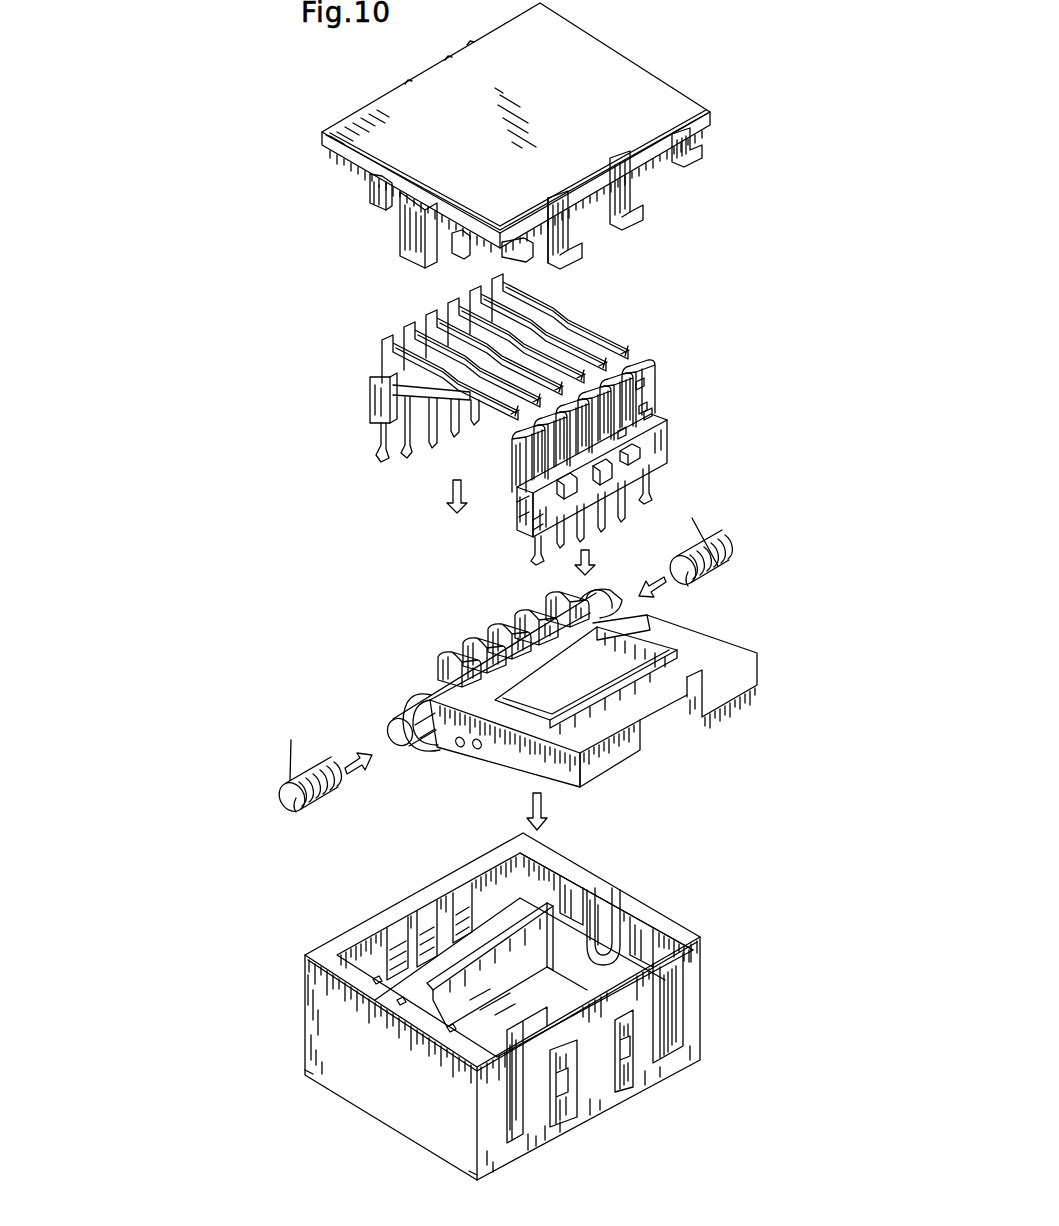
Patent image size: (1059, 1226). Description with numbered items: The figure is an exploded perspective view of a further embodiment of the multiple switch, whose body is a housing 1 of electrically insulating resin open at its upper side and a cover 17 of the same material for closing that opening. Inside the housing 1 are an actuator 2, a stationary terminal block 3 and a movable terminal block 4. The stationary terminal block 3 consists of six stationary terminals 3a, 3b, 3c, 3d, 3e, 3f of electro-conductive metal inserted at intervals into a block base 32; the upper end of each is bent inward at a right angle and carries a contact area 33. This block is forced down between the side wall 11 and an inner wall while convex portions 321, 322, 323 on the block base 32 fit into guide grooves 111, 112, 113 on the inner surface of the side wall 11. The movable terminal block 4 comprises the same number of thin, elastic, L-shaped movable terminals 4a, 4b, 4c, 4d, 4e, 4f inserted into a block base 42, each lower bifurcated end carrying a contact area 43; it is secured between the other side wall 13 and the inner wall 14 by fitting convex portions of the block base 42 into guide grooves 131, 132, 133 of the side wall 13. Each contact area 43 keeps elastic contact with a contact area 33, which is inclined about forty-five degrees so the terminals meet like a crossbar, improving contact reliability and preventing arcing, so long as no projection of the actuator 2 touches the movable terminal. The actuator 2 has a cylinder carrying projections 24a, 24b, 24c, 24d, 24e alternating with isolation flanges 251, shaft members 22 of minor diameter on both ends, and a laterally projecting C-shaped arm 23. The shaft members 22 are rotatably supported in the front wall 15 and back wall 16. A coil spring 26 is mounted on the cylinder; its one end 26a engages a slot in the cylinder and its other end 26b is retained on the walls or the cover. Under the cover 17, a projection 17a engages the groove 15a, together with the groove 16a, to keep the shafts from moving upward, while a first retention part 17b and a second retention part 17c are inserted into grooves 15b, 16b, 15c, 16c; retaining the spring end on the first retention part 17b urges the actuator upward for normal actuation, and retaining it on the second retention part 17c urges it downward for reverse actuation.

The housing 1 is at (403, 1141).
The actuator 2 is at (411, 659).
The stationary terminal block 3 is at (508, 539).
The stationary terminal 3a is at (533, 457).
The stationary terminal 3b is at (523, 507).
The stationary terminal 3c is at (641, 383).
The stationary terminal 3d is at (645, 407).
The stationary terminal 3e is at (624, 433).
The stationary terminal 3f is at (650, 414).
The movable terminal block 4 is at (372, 350).
The movable terminal 4a is at (392, 338).
The movable terminal 4b is at (420, 327).
The movable terminal 4c is at (437, 305).
The movable terminal 4d is at (463, 298).
The movable terminal 4e is at (500, 287).
The movable terminal 4f is at (518, 275).
The side wall 11 is at (535, 1133).
The side wall 13 is at (347, 930).
The inner wall 14 is at (507, 940).
The front wall 15 is at (317, 1040).
The groove 15a is at (400, 1022).
The groove 15b is at (380, 988).
The groove 15c is at (448, 1032).
The back wall 16 is at (560, 853).
The groove 16a is at (612, 896).
The groove 16b is at (572, 890).
The groove 16c is at (648, 918).
The cover 17 is at (378, 118).
The projection 17a is at (410, 232).
The first retention part 17b is at (372, 195).
The second retention part 17c is at (452, 226).
The shaft member 22 is at (398, 745).
The C-shaped arm 23 is at (500, 750).
The projection 24a is at (450, 654).
The projection 24b is at (478, 638).
The projection 24c is at (505, 624).
The projection 24d is at (535, 609).
The projection 24e is at (560, 592).
The coil spring 26 is at (293, 813).
The spring end 26a is at (327, 797).
The spring end 26b is at (291, 740).
The block base 32 is at (657, 453).
The contact area 33 is at (607, 385).
The block base 42 is at (372, 410).
The contact area 43 is at (587, 358).
The guide groove 111 is at (560, 1080).
The guide groove 112 is at (622, 1086).
The guide groove 113 is at (666, 970).
The guide groove 131 is at (390, 920).
The guide groove 132 is at (430, 903).
The guide groove 133 is at (460, 883).
The isolation flange 251 is at (436, 668).
The convex portion 321 is at (573, 497).
The convex portion 322 is at (612, 474).
The convex portion 323 is at (638, 454).